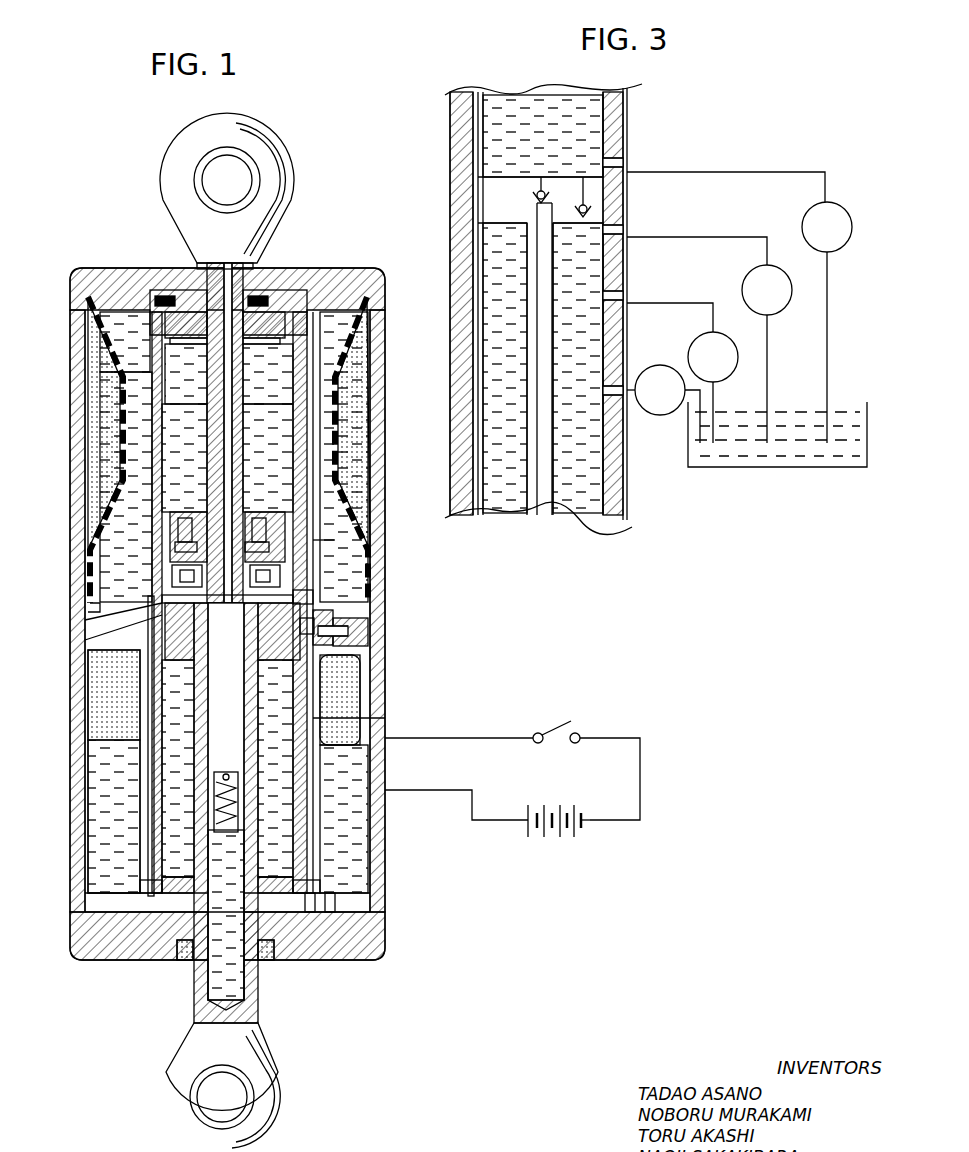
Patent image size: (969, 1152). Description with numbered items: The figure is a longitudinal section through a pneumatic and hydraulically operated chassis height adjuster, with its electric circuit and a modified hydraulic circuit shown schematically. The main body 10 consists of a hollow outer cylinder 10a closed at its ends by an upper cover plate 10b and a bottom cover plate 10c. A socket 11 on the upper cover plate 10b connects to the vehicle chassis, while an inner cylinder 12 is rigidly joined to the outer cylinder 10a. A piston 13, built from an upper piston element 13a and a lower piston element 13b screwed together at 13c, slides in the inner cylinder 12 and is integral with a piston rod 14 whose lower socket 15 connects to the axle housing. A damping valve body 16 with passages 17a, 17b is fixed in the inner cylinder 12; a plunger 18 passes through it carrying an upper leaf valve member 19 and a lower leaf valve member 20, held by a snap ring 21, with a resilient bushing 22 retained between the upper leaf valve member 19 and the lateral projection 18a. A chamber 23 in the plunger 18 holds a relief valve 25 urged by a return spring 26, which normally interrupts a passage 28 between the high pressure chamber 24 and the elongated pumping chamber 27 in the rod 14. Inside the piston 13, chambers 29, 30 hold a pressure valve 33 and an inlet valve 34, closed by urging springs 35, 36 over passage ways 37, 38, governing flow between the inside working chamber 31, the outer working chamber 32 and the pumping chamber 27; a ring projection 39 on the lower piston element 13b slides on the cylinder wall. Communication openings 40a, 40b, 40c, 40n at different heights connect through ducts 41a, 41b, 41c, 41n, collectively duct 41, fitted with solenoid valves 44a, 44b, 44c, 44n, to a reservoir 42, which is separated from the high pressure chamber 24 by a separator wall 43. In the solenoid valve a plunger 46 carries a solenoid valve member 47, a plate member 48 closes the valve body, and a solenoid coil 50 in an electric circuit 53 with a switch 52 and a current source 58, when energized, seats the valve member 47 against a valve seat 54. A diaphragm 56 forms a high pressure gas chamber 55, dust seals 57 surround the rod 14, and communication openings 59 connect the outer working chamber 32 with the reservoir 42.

In FIG. 1, the main body 10 is at (68, 744).
In FIG. 1, the outer cylinder 10a is at (78, 824).
In FIG. 1, the upper cover plate 10b is at (325, 286).
In FIG. 1, the bottom cover plate 10c is at (362, 952).
In FIG. 1, the socket 11 is at (257, 156).
In FIG. 1, the inner cylinder 12 is at (362, 452).
In FIG. 3, the inner cylinder 12 is at (625, 106).
In FIG. 1, the piston 13 is at (193, 512).
In FIG. 3, the piston 13 is at (480, 196).
In FIG. 1, the upper piston element 13a is at (270, 525).
In FIG. 1, the lower piston element 13b is at (301, 534).
In FIG. 1, the screw connection 13c is at (375, 547).
In FIG. 1, the piston rod 14 is at (248, 1011).
In FIG. 3, the piston rod 14 is at (505, 321).
In FIG. 1, the socket 15 is at (255, 1076).
In FIG. 1, the damping valve body 16 is at (273, 341).
In FIG. 1, the passage 17a is at (178, 333).
In FIG. 1, the passage 17b is at (283, 332).
In FIG. 1, the plunger 18 is at (214, 410).
In FIG. 1, the lateral projection 18a is at (214, 296).
In FIG. 1, the upper leaf valve member 19 is at (266, 300).
In FIG. 1, the lower leaf valve member 20 is at (125, 345).
In FIG. 1, the snap ring 21 is at (212, 346).
In FIG. 1, the resilient bushing 22 is at (200, 298).
In FIG. 1, the chamber 23 is at (208, 821).
In FIG. 1, the high pressure chamber 24 is at (113, 426).
In FIG. 1, the relief valve 25 is at (222, 780).
In FIG. 1, the return spring 26 is at (217, 797).
In FIG. 1, the pumping chamber 27 is at (235, 971).
In FIG. 3, the pumping chamber 27 is at (522, 271).
In FIG. 1, the passage 28 is at (231, 450).
In FIG. 1, the chamber 29 is at (178, 521).
In FIG. 1, the chamber 30 is at (200, 601).
In FIG. 1, the inside working chamber 31 is at (140, 461).
In FIG. 3, the inside working chamber 31 is at (462, 120).
In FIG. 1, the outer working chamber 32 is at (352, 861).
In FIG. 3, the outer working chamber 32 is at (472, 406).
In FIG. 1, the pressure valve 33 is at (180, 575).
In FIG. 3, the pressure valve 33 is at (539, 189).
In FIG. 1, the inlet valve 34 is at (114, 771).
In FIG. 3, the inlet valve 34 is at (581, 203).
In FIG. 1, the urging spring 35 is at (186, 546).
In FIG. 1, the urging spring 36 is at (215, 623).
In FIG. 1, the passage way 37 is at (180, 606).
In FIG. 1, the passage way 38 is at (265, 641).
In FIG. 1, the ring projection 39 is at (291, 580).
In FIG. 1, the communication opening 40a is at (300, 598).
In FIG. 3, the communication opening 40a is at (626, 164).
In FIG. 1, the communication opening 40b is at (362, 720).
In FIG. 3, the communication opening 40b is at (626, 230).
In FIG. 3, the communication opening 40c is at (626, 296).
In FIG. 3, the communication opening 40n is at (633, 385).
In FIG. 1, the duct 41 is at (362, 831).
In FIG. 3, the duct 41a is at (829, 278).
In FIG. 3, the duct 41b is at (737, 236).
In FIG. 3, the duct 41c is at (702, 300).
In FIG. 3, the duct 41n is at (648, 420).
In FIG. 1, the reservoir 42 is at (352, 896).
In FIG. 3, the reservoir 42 is at (786, 468).
In FIG. 1, the separator wall 43 is at (365, 622).
In FIG. 3, the solenoid valve 44a is at (834, 212).
In FIG. 3, the solenoid valve 44b is at (774, 318).
In FIG. 3, the solenoid valve 44c is at (740, 337).
In FIG. 3, the solenoid valve 44n is at (667, 412).
In FIG. 1, the plunger 46 is at (350, 692).
In FIG. 1, the solenoid valve member 47 is at (232, 643).
In FIG. 1, the plate member 48 is at (345, 648).
In FIG. 1, the solenoid coil 50 is at (372, 640).
In FIG. 1, the switch 52 is at (577, 724).
In FIG. 1, the electric circuit 53 is at (641, 770).
In FIG. 1, the valve seat 54 is at (370, 615).
In FIG. 1, the high pressure gas chamber 55 is at (362, 375).
In FIG. 1, the diaphragm 56 is at (365, 510).
In FIG. 1, the dust seal 57 is at (280, 912).
In FIG. 1, the current source 58 is at (553, 832).
In FIG. 1, the communication opening 59 is at (318, 905).